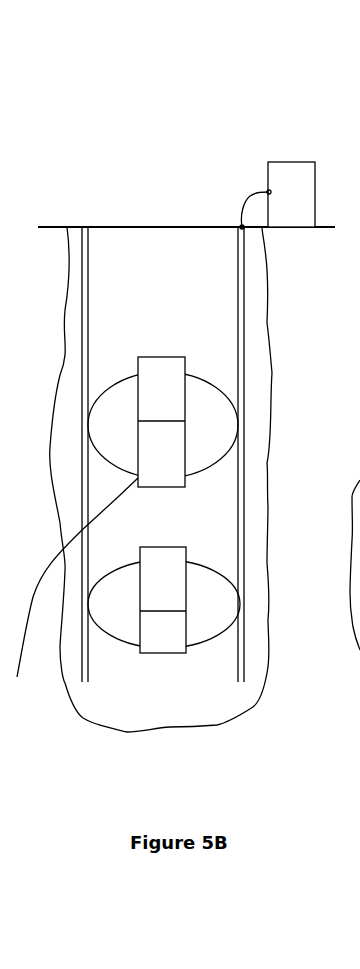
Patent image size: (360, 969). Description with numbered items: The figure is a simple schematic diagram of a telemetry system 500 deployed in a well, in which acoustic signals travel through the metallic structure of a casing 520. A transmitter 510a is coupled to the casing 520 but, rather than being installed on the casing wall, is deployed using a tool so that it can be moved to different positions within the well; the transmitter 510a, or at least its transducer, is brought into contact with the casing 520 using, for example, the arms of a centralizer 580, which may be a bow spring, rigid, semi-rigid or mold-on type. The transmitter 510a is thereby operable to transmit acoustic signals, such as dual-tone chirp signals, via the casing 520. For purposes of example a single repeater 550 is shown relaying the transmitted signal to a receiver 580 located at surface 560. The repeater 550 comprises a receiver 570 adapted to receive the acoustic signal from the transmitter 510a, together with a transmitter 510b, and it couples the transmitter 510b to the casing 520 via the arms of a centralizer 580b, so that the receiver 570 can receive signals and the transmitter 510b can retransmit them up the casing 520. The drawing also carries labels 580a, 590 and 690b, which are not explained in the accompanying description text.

The telemetry system 500 is at (123, 143).
The transmitter 510a is at (187, 547).
The transmitter 510b is at (138, 368).
The casing 520 is at (245, 467).
The repeater 550 is at (182, 362).
The surface 560 is at (55, 225).
The receiver 570 is at (70, 592).
The receiver 580 is at (300, 162).
The first antenna coil 580a is at (223, 635).
The centralizer 580b is at (227, 390).
The load 590 is at (180, 653).
The formation boundary 690b is at (352, 535).